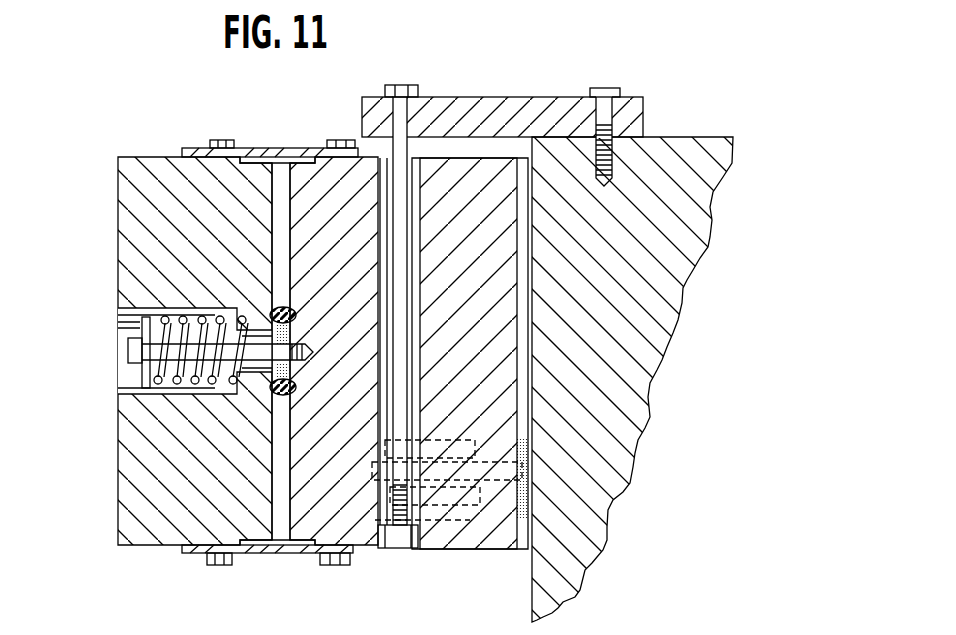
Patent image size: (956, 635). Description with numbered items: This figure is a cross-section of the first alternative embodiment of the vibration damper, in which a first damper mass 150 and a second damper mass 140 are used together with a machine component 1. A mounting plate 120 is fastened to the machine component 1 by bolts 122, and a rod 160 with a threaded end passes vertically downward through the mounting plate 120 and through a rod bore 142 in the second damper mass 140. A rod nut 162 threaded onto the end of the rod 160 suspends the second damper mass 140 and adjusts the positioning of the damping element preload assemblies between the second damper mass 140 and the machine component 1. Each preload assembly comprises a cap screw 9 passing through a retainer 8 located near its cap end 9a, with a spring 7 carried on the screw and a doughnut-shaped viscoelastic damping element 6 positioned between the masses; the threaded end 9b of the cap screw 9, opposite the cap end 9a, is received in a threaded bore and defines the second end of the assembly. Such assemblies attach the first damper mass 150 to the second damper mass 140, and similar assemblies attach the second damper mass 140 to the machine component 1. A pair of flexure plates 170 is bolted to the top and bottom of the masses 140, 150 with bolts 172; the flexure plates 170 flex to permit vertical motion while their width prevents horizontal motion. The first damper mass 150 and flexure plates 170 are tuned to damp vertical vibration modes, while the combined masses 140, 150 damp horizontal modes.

The machine component 1 is at (693, 230).
The mounting plate 120 is at (505, 96).
The bolts 122 is at (606, 88).
The second damper mass 140 is at (290, 225).
The rod bore 142 is at (428, 338).
The first damper mass 150 is at (116, 487).
The rod 160 is at (398, 84).
The rod nut 162 is at (390, 550).
The flexure plates 170 is at (192, 146).
The bolts 172 is at (325, 142).
The damping element 6 is at (294, 387).
The spring 7 is at (210, 386).
The retainer 8 is at (118, 372).
The cap screw 9 is at (116, 352).
The cap end 9a is at (118, 338).
The threaded end 9b is at (294, 316).